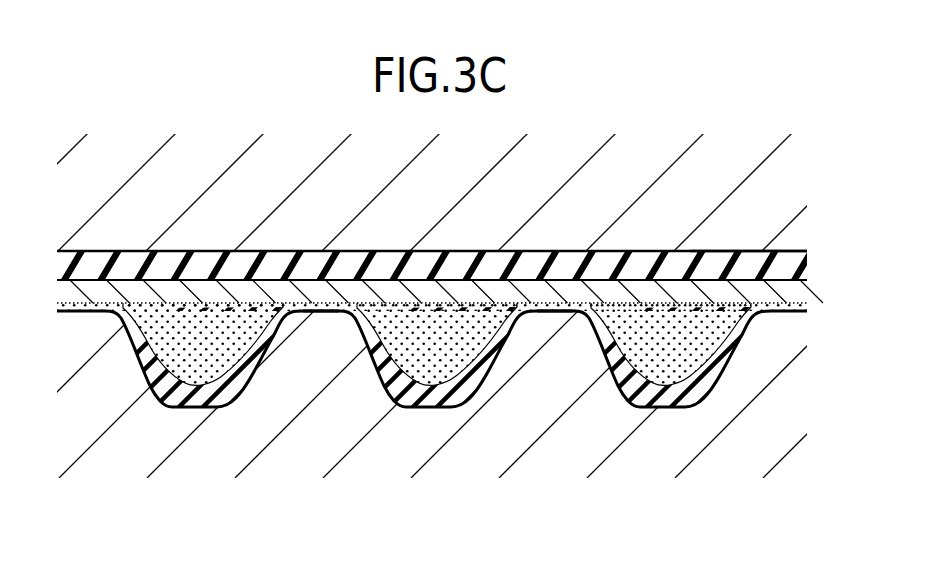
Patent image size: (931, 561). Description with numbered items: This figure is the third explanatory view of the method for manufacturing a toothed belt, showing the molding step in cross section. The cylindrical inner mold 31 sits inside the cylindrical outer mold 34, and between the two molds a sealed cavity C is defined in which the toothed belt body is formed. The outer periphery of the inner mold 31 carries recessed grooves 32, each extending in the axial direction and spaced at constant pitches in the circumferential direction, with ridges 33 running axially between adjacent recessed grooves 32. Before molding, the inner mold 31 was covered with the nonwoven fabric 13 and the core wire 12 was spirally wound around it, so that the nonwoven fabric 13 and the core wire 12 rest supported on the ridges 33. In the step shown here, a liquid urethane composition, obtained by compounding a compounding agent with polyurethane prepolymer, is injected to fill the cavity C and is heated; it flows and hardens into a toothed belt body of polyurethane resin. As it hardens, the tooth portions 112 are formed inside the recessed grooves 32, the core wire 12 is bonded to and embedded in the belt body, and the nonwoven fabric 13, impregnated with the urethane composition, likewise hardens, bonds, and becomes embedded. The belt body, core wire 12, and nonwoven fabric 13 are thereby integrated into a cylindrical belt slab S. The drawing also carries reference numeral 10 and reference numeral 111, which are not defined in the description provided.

The substrate film 10 is at (204, 268).
The first surface of substrate film 111 is at (130, 268).
The tooth portion 112 is at (170, 398).
The core wire 12 is at (653, 293).
The nonwoven fabric 13 is at (656, 358).
The inner mold 31 is at (490, 466).
The recessed grooves 32 is at (205, 397).
The ridges 33 is at (322, 320).
The outer mold 34 is at (458, 187).
The cavity C is at (707, 253).
The belt slab S is at (774, 251).